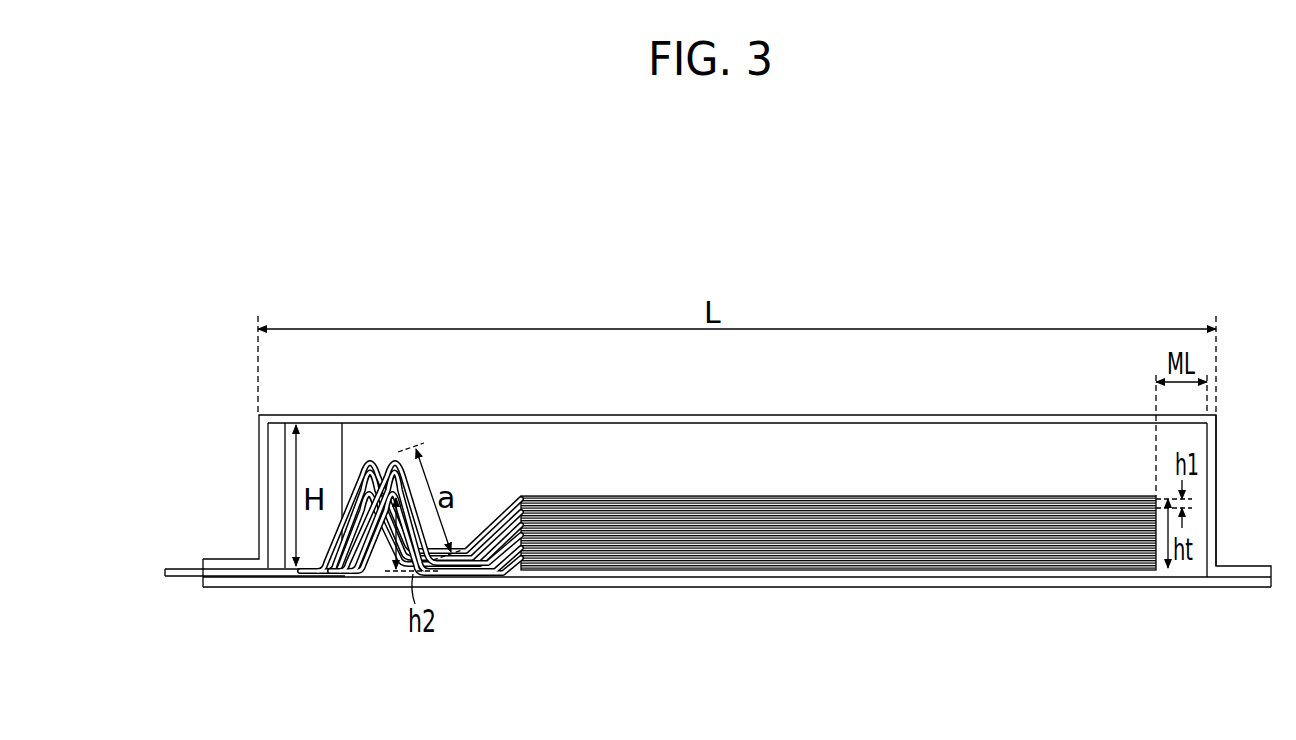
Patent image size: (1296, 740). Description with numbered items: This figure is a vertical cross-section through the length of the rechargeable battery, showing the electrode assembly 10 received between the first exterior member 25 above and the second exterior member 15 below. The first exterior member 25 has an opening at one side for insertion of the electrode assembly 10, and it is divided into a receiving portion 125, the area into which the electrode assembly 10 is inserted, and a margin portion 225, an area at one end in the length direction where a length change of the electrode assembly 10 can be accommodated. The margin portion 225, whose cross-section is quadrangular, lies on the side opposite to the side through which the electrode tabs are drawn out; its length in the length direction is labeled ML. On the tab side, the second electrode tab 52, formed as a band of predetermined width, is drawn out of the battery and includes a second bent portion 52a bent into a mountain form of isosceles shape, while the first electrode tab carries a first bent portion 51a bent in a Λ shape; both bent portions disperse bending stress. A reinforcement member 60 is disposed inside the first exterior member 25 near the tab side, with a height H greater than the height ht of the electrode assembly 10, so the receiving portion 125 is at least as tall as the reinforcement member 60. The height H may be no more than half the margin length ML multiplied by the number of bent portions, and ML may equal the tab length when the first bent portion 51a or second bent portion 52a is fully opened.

The electrode assembly 10 is at (955, 490).
The second exterior member 15 is at (1235, 582).
The first exterior member 25 is at (743, 421).
The receiving portion 125 is at (672, 436).
The margin portion 225 is at (1195, 440).
The first bent portion 51a is at (372, 447).
The second bent portion 52a is at (416, 478).
The second electrode tab 52 is at (160, 582).
The reinforcement member 60 is at (315, 443).